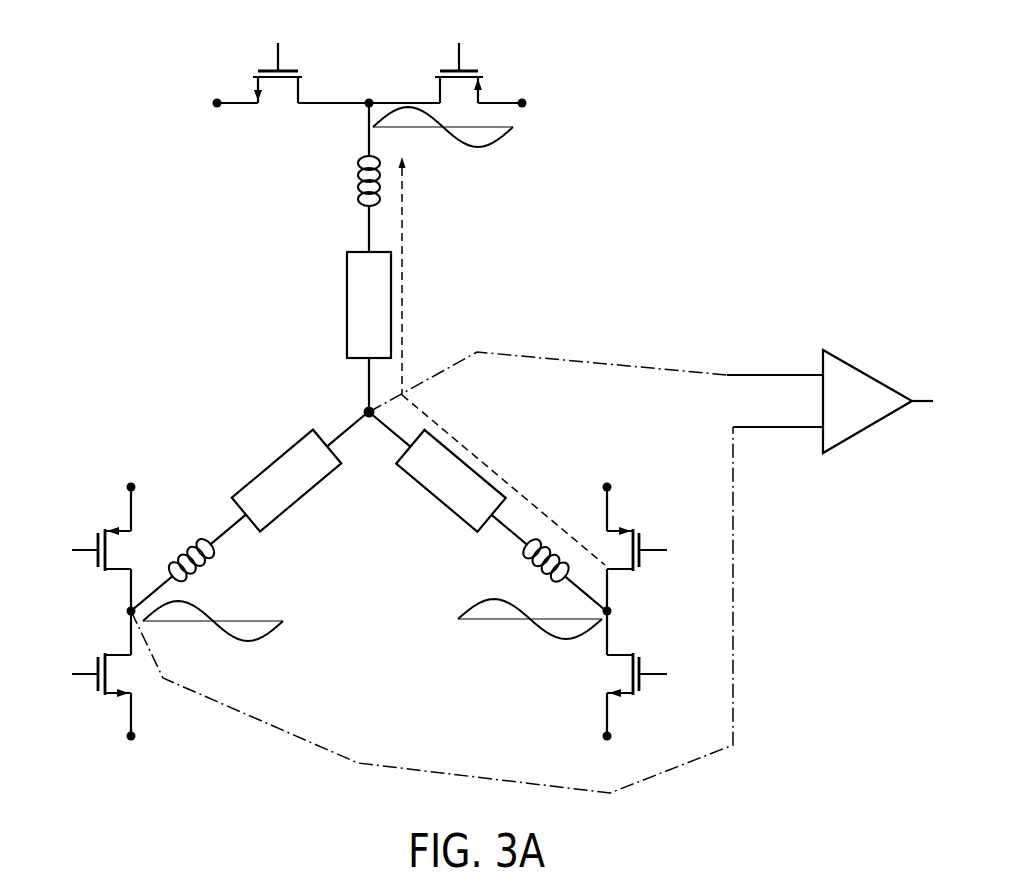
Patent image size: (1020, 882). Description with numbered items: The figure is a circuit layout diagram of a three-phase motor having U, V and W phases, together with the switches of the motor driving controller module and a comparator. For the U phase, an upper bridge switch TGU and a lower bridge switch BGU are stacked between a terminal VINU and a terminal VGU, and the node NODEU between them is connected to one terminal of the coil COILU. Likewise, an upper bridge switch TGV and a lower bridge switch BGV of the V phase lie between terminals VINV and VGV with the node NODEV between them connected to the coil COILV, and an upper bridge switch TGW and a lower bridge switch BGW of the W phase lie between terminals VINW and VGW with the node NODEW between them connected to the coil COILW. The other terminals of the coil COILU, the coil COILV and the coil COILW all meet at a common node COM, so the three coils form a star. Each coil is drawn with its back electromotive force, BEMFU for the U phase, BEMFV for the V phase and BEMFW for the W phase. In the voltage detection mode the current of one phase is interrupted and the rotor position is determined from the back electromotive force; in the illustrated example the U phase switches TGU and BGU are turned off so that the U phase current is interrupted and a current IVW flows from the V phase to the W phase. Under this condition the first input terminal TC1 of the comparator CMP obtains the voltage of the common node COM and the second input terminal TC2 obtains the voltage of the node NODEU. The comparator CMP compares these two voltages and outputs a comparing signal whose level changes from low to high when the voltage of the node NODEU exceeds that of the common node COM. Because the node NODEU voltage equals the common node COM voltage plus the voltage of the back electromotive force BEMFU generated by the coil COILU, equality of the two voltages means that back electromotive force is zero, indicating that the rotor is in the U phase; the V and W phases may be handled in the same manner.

The lower bridge switch of the W phase BGW is at (280, 59).
The upper bridge switch of the W phase TGW is at (462, 59).
The ground voltage terminal W VGW is at (204, 100).
The input voltage terminal W VINW is at (536, 100).
The node of the W phase NODEW is at (405, 108).
The coil of the W phase COILW is at (326, 181).
The back EMF W BEMFW is at (353, 305).
The current IVW is at (502, 361).
The common node COM is at (339, 399).
The back electromotive force of the U phase BEMFU is at (276, 469).
The back EMF V BEMFV is at (460, 469).
The coil of the U phase COILU is at (220, 562).
The coil of the V phase COILV is at (515, 563).
The input voltage terminal U VINU is at (132, 471).
The upper bridge switch of the U phase TGU is at (74, 549).
The node of the U phase NODEU is at (160, 619).
The lower bridge switch of the U phase BGU is at (74, 675).
The ground voltage terminal U VGU is at (132, 753).
The input voltage terminal V VINV is at (606, 472).
The upper bridge switch of the V phase TGV is at (664, 549).
The node of the V phase NODEV is at (578, 617).
The lower bridge switch of the V phase BGV is at (664, 675).
The ground voltage terminal V VGV is at (607, 751).
The first input terminal TC1 is at (596, 381).
The second input terminal TC2 is at (477, 596).
The comparator CMP is at (878, 401).